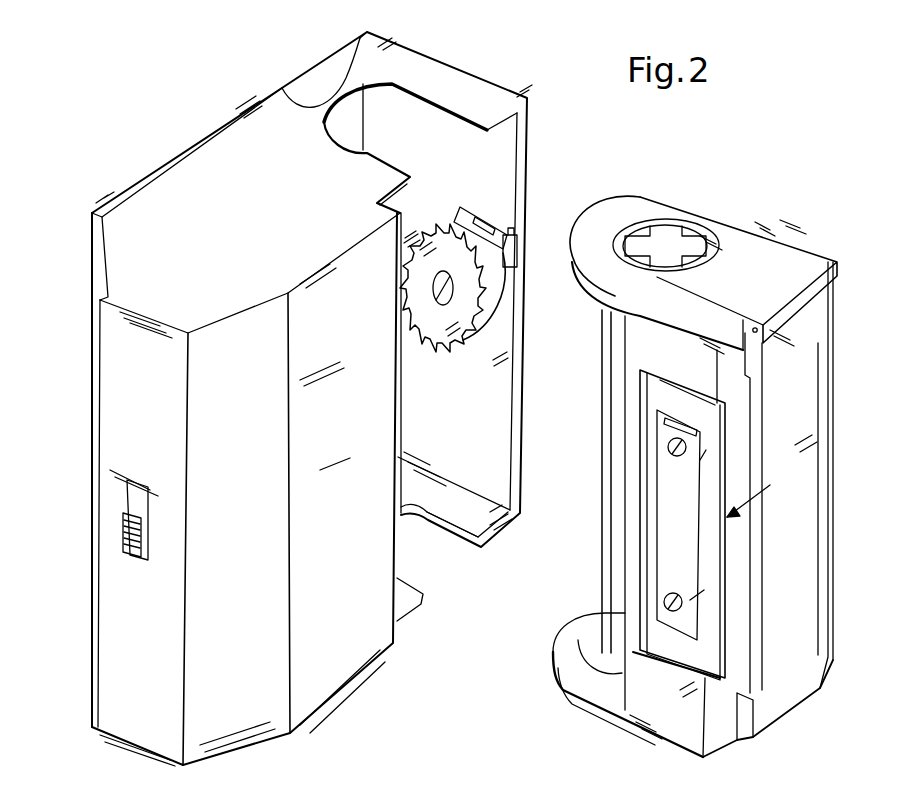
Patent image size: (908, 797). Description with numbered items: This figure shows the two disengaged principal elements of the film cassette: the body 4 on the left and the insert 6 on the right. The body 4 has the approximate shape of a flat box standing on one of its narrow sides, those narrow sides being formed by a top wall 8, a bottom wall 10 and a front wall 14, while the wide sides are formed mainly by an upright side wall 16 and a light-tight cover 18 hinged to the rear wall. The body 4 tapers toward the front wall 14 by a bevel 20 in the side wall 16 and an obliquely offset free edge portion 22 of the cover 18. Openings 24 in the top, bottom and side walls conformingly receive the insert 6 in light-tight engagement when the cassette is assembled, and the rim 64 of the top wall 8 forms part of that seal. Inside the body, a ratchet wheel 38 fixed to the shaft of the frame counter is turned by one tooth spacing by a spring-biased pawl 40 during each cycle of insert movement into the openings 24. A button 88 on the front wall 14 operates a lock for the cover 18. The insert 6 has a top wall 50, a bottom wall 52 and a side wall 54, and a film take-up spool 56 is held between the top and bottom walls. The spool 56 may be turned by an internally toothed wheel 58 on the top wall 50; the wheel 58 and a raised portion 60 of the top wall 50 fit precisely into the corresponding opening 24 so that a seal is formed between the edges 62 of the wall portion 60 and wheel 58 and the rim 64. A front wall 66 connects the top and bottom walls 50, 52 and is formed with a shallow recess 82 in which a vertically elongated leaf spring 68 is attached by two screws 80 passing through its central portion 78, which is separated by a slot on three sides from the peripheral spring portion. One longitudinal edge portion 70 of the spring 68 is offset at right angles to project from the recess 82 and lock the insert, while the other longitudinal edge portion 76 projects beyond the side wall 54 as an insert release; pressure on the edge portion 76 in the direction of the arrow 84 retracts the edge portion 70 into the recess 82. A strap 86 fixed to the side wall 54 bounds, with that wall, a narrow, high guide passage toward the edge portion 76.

The body 4 is at (178, 152).
The insert 6 is at (548, 684).
The top wall 8 is at (104, 262).
The bottom wall 10 is at (494, 535).
The front wall 14 is at (110, 638).
The side wall 16 is at (347, 658).
The light-tight cover 18 is at (282, 90).
The bevel 20 is at (273, 578).
The obliquely offset free edge portion 22 is at (92, 447).
The openings 24 is at (418, 573).
The ratchet wheel 38 is at (448, 350).
The pawl 40 is at (468, 212).
The top wall 50 is at (750, 228).
The bottom wall 52 is at (650, 733).
The side wall 54 is at (748, 737).
The film take-up spool 56 is at (600, 592).
The internally toothed wheel 58 is at (683, 218).
The raised portion 60 is at (780, 268).
The edges 62 is at (837, 273).
The rim 64 is at (390, 162).
The front wall 66 is at (712, 697).
The leaf spring 68 is at (655, 642).
The longitudinal edge portion 70 is at (638, 512).
The longitudinal edge portion 76 is at (736, 618).
The central portion 78 is at (685, 510).
The screws 80 is at (688, 422).
The shallow recess 82 is at (665, 655).
The arrow 84 is at (748, 500).
The strap 86 is at (808, 688).
The button 88 is at (134, 566).